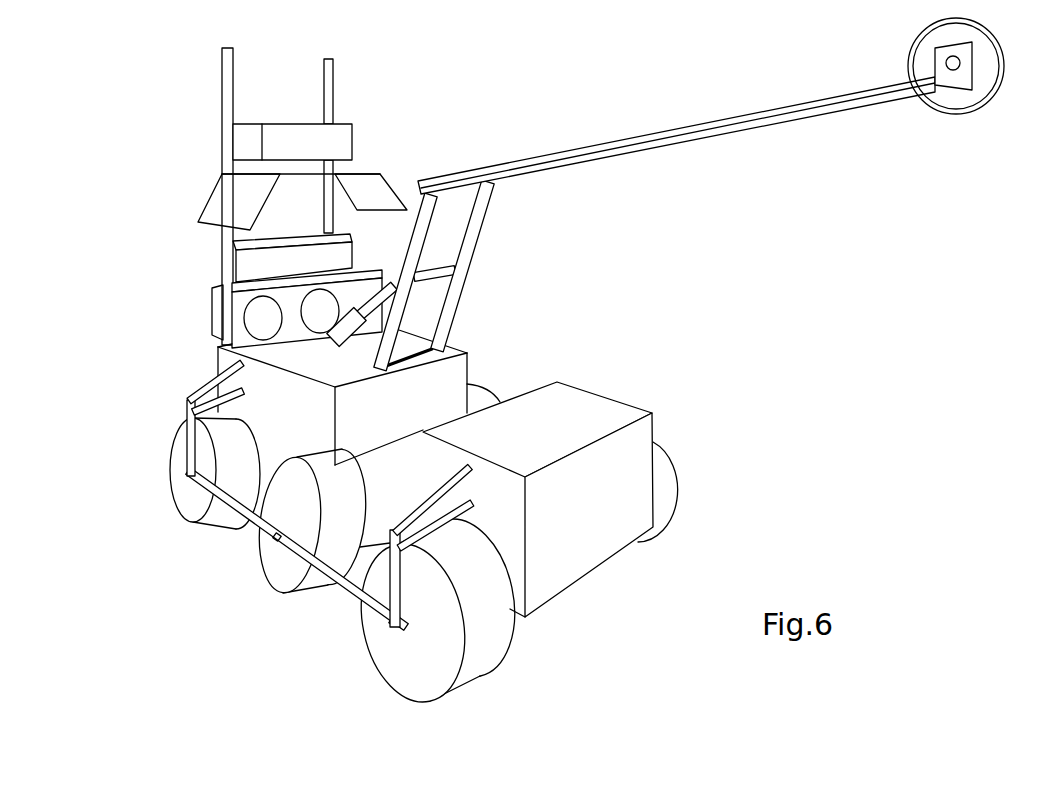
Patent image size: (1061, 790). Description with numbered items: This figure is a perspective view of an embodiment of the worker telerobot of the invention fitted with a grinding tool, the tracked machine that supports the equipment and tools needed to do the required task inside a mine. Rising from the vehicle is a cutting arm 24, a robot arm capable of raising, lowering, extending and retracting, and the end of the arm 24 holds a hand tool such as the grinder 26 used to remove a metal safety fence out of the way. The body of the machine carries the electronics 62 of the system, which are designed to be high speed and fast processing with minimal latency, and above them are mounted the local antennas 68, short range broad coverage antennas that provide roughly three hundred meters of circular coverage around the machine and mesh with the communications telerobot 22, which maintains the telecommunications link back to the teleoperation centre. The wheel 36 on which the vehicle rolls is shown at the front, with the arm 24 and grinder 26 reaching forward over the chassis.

The communications telerobot 22 is at (607, 496).
The cutting arm 24 is at (800, 123).
The grinder 26 is at (962, 117).
The wheel 36 is at (477, 608).
The electronics 62 is at (248, 263).
The local antennas 68 is at (249, 146).